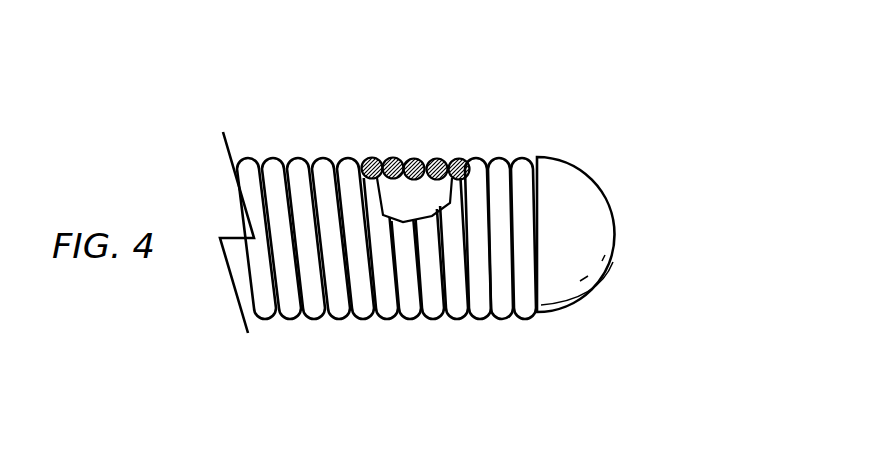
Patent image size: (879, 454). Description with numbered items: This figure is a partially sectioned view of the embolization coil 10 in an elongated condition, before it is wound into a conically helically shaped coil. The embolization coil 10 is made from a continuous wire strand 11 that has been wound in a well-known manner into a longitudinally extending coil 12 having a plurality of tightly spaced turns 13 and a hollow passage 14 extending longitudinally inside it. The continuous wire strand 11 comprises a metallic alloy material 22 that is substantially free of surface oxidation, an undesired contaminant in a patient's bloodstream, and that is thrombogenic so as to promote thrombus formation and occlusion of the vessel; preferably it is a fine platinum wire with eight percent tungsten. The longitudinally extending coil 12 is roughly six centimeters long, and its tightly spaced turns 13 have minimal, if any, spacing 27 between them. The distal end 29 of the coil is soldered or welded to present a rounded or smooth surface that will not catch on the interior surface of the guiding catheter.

The embolization coil 10 is at (410, 56).
The continuous wire strand 11 is at (287, 318).
The longitudinally extending coil 12 is at (290, 147).
The tightly spaced turns 13 is at (348, 323).
The hollow passage 14 is at (402, 204).
The metallic alloy material 22 is at (435, 157).
The spacing 27 is at (333, 157).
The distal end 29 is at (603, 202).